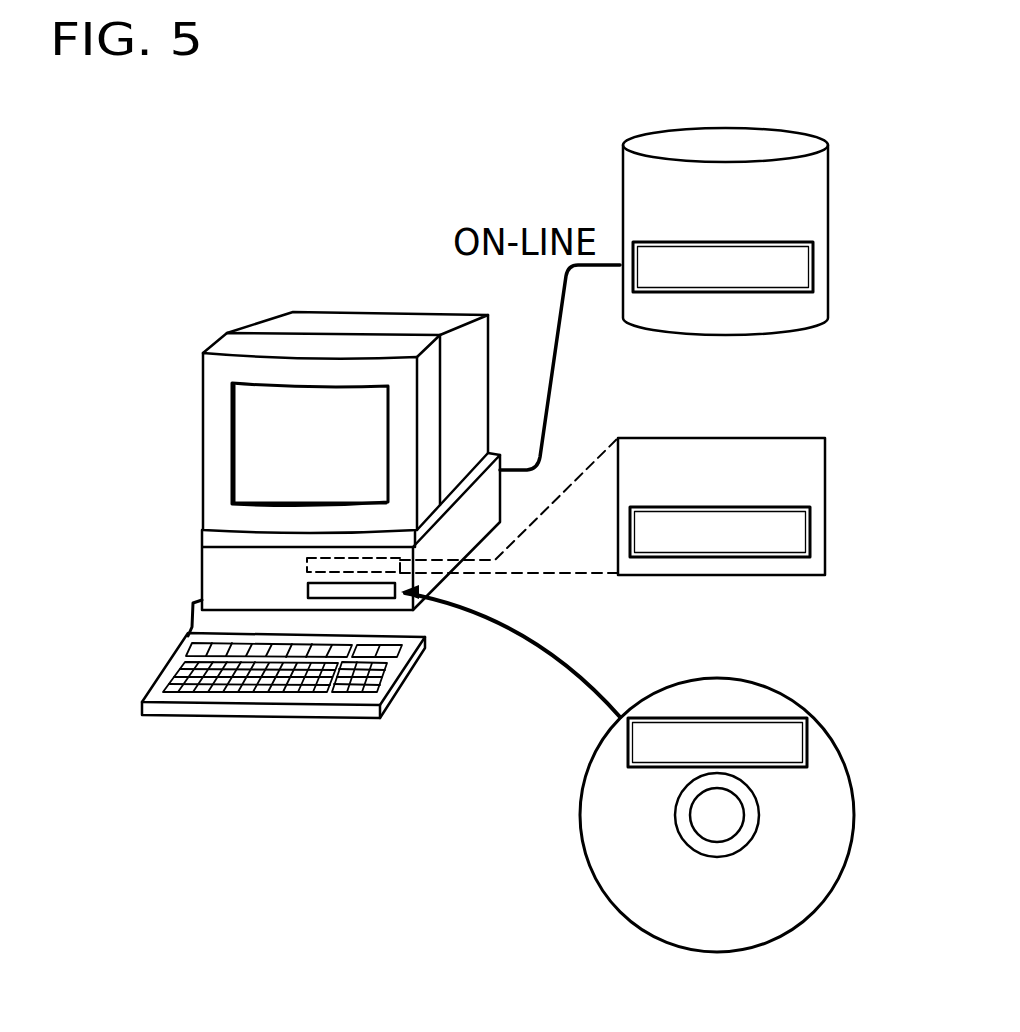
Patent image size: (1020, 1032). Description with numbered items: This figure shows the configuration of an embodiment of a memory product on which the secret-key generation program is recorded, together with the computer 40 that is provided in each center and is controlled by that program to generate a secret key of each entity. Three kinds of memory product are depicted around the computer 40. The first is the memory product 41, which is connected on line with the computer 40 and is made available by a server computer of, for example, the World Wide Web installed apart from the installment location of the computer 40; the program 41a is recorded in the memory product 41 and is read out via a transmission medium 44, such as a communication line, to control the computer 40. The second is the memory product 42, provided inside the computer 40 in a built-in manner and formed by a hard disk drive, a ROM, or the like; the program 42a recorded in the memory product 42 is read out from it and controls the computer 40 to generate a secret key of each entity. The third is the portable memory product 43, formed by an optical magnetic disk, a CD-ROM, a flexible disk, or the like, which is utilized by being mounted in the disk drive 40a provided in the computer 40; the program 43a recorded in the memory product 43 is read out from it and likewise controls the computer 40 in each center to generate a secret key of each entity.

The computer 40 is at (362, 314).
The disk drive 40a is at (396, 598).
The memory product 41 is at (829, 173).
The program 41a is at (673, 242).
The memory product 42 is at (762, 437).
The program 42a is at (642, 507).
The memory product 43 is at (680, 680).
The program 43a is at (752, 718).
The transmission medium 44 is at (552, 365).